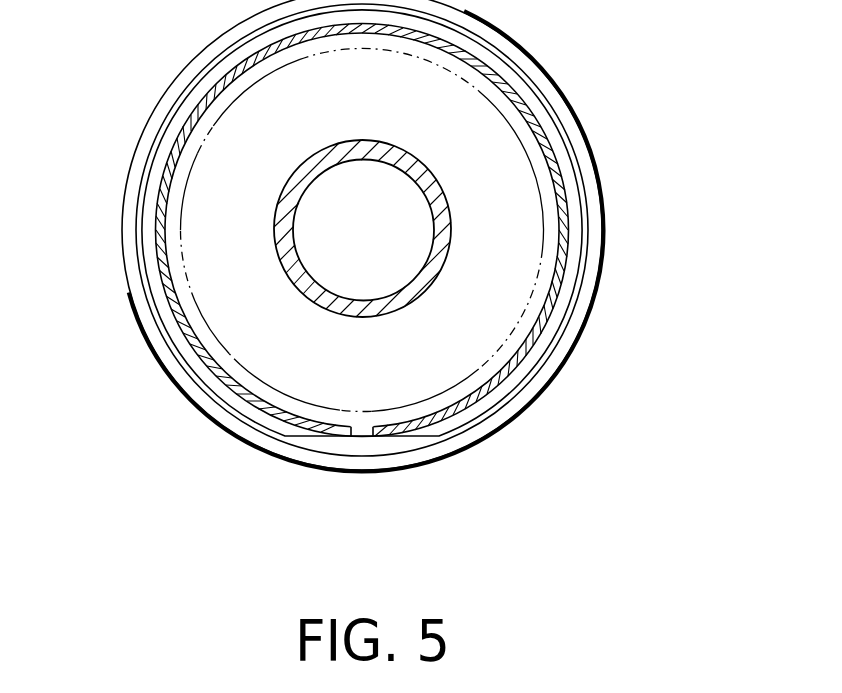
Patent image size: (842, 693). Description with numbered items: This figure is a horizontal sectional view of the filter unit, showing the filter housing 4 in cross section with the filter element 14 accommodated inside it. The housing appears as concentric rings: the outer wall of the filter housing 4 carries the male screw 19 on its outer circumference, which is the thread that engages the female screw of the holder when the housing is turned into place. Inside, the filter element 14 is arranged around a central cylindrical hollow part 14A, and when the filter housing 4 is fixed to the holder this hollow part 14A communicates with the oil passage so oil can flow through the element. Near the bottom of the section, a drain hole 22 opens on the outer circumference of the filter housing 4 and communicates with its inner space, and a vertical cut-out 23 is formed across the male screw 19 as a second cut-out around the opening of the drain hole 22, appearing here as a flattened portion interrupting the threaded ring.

The filter housing 4 is at (147, 125).
The male screw 19 is at (157, 205).
The filter element 14 is at (545, 237).
The cylindrical hollow part 14A is at (393, 267).
The drain hole 22 is at (368, 438).
The vertical cut-out 23 is at (330, 438).